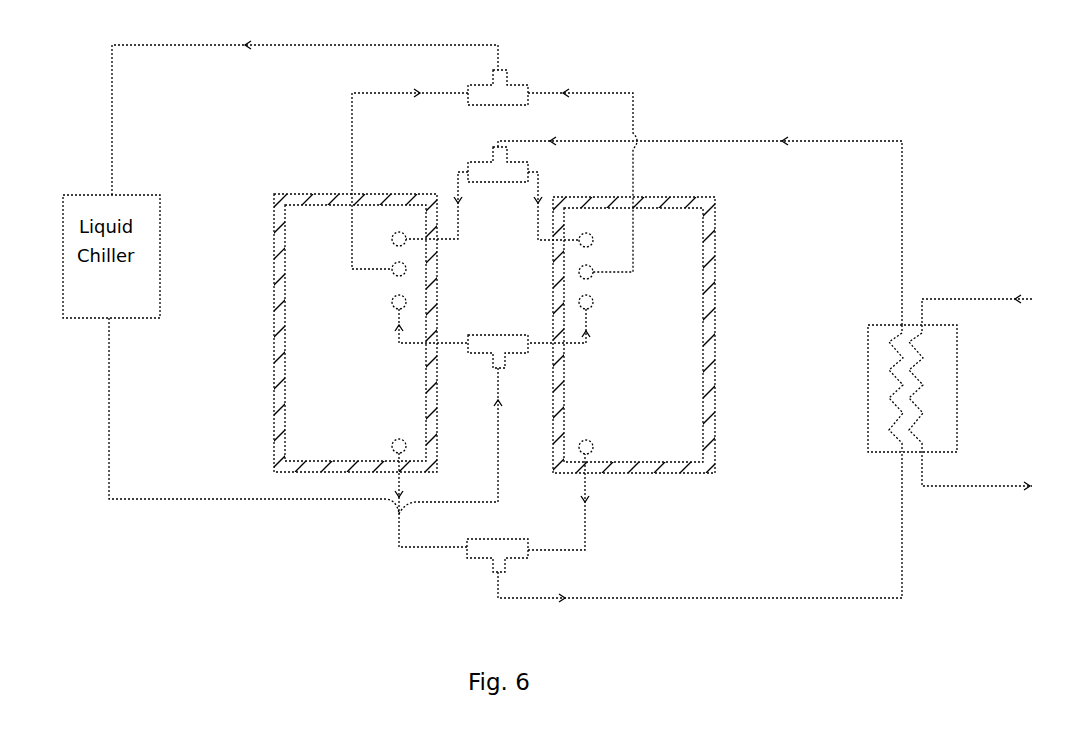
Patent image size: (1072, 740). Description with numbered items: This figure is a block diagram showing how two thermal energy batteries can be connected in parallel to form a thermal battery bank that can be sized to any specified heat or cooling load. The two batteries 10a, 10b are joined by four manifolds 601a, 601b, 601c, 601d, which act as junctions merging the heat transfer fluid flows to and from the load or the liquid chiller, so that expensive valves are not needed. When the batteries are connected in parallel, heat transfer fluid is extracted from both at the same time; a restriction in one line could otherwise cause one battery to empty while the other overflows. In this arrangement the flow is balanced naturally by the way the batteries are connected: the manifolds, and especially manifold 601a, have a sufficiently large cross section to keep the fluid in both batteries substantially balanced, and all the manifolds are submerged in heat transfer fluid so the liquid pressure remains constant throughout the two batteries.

The battery 10a is at (265, 373).
The battery 10b is at (722, 415).
The manifold 601a is at (492, 567).
The manifold 601b is at (493, 366).
The manifold 601c is at (500, 182).
The manifold 601d is at (452, 105).